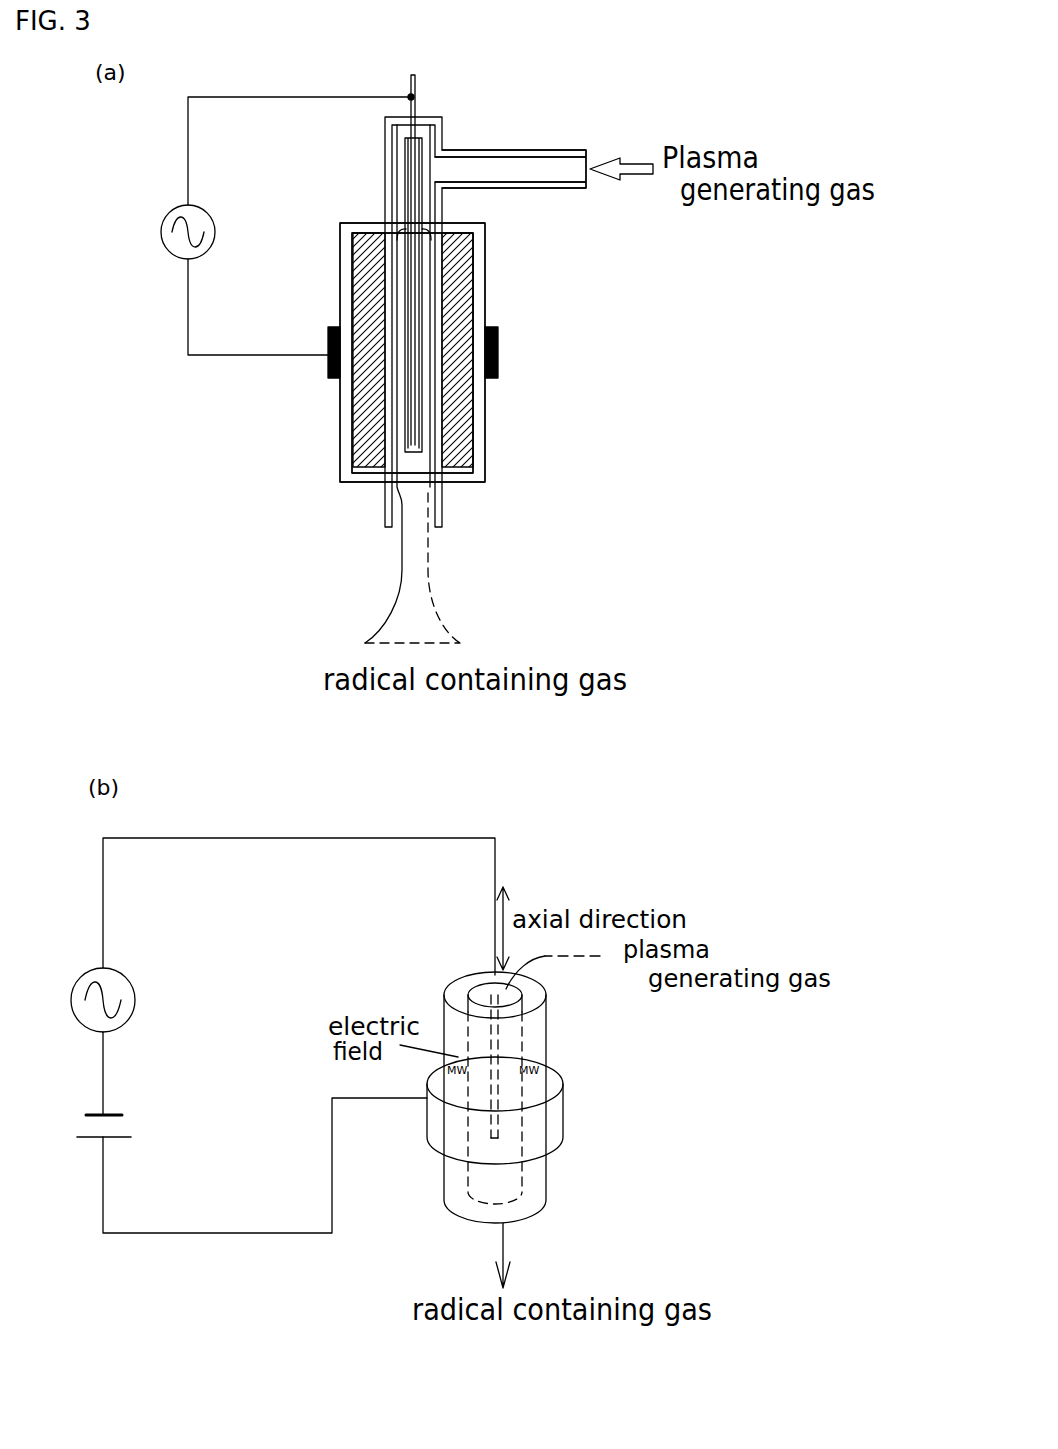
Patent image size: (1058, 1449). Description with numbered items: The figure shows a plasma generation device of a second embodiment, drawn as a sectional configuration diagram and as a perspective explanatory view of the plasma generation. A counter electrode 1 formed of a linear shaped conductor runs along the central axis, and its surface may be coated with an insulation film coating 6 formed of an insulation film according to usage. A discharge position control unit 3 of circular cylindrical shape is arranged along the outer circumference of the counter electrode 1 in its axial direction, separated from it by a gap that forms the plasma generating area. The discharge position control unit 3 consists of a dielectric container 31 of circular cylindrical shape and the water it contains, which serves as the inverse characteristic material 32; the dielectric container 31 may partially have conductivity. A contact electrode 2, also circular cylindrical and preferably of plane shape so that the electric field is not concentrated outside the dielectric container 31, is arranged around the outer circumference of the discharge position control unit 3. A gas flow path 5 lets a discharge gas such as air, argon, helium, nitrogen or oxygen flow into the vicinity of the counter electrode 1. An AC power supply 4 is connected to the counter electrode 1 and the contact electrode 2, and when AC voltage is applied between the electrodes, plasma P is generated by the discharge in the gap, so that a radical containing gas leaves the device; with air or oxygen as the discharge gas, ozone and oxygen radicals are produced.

The counter electrode 1 is at (416, 88).
The contact electrode 2 is at (328, 335).
The discharge position control unit 3 is at (546, 237).
The dielectric container 31 is at (485, 265).
The inverse characteristic material 32 is at (450, 298).
The AC power supply 4 is at (213, 212).
The gas flow path 5 is at (510, 170).
The insulation film coating 6 is at (407, 397).
The plasma P is at (417, 473).